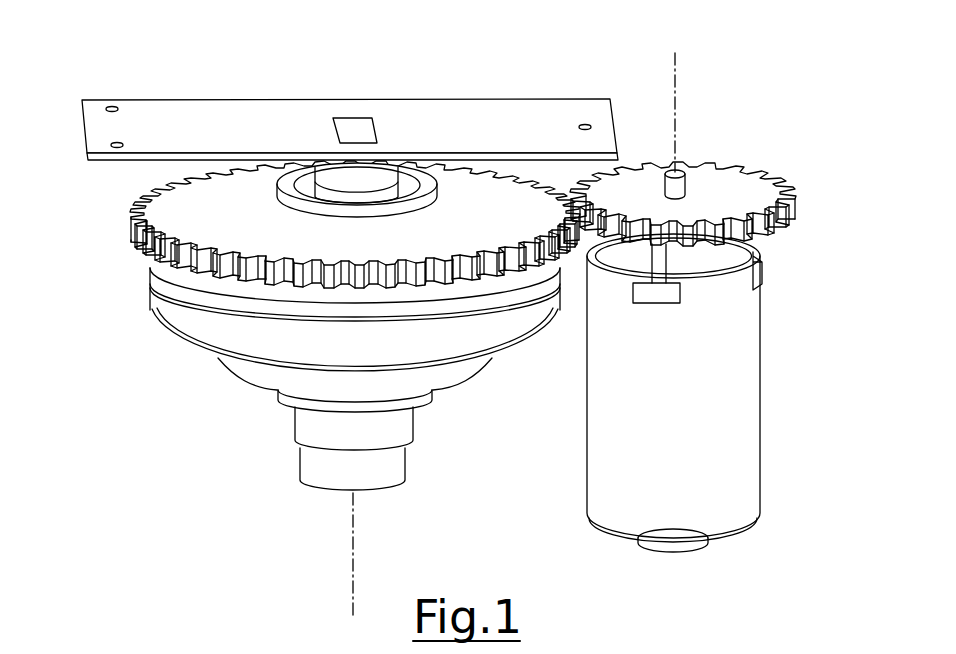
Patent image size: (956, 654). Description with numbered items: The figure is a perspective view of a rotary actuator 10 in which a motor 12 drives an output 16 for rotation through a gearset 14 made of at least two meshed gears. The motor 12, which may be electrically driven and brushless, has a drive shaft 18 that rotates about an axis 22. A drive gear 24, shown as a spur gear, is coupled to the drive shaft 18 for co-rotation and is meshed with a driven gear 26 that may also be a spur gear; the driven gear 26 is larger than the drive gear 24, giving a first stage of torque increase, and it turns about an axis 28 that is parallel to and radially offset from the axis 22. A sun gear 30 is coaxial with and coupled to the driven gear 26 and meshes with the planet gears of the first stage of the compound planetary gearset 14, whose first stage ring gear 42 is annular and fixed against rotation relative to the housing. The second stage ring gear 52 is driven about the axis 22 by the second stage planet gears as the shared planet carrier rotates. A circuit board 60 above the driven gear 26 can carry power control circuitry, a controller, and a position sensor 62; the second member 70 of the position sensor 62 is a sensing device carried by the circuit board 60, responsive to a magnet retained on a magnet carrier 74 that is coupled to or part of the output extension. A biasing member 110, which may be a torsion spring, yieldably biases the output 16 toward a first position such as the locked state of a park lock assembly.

The rotary actuator 10 is at (706, 113).
The motor 12 is at (750, 340).
The gearset 14 is at (201, 379).
The output 16 is at (390, 458).
The drive shaft 18 is at (678, 187).
The axis 22 is at (675, 71).
The drive gear 24 is at (752, 194).
The driven gear 26 is at (203, 216).
The axis 28 is at (353, 556).
The sun gear 30 is at (392, 212).
The first stage ring gear 42 is at (187, 280).
The second stage ring gear 52 is at (460, 340).
The circuit board 60 is at (466, 97).
The position sensor 62 is at (366, 112).
The second member 70 is at (345, 123).
The magnet carrier 74 is at (215, 170).
The biasing member 110 is at (292, 403).